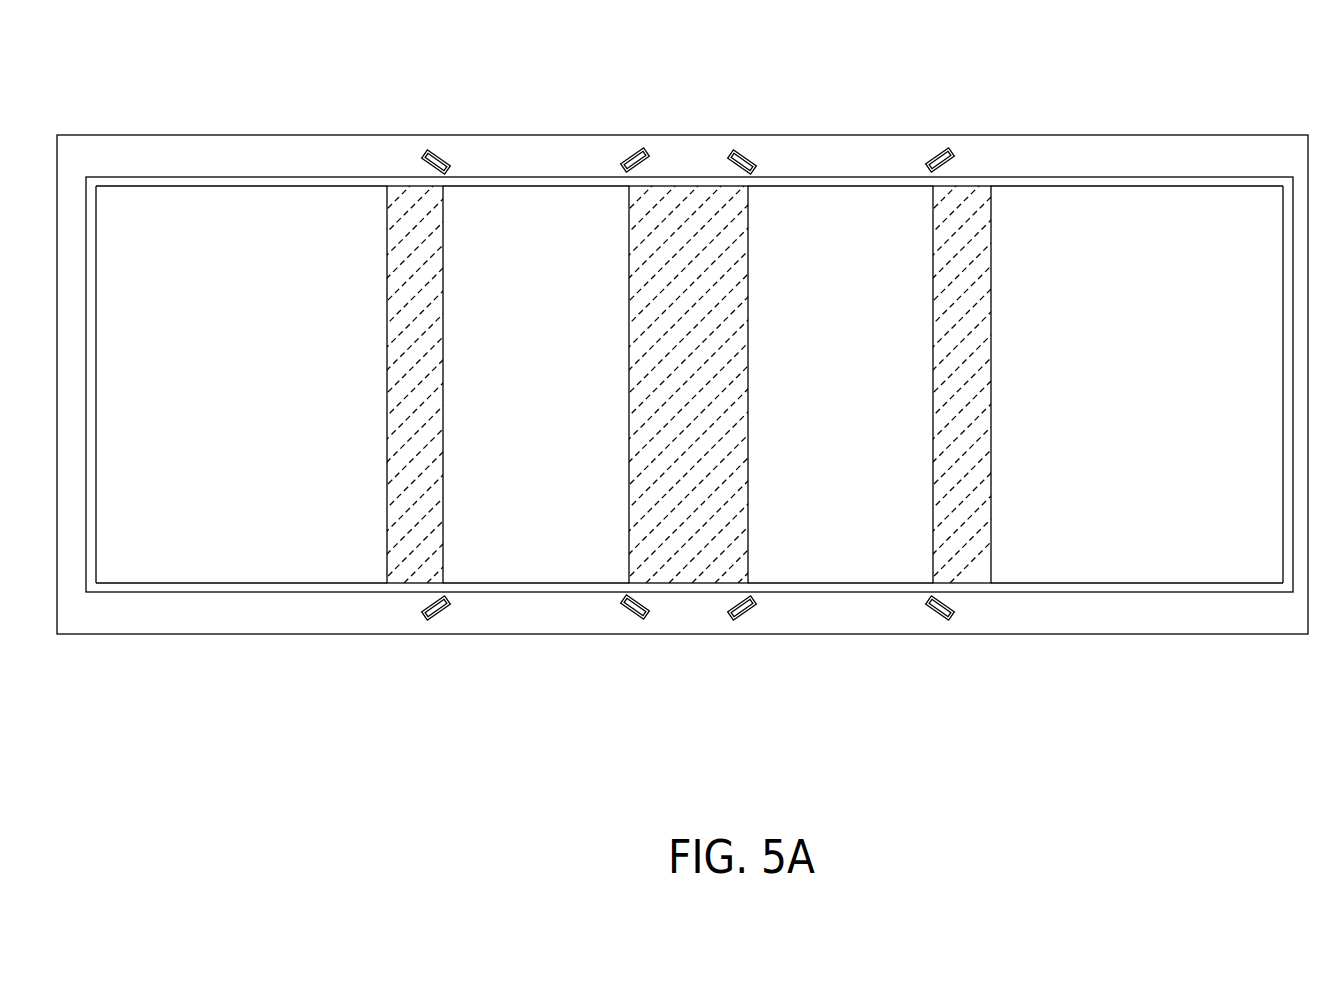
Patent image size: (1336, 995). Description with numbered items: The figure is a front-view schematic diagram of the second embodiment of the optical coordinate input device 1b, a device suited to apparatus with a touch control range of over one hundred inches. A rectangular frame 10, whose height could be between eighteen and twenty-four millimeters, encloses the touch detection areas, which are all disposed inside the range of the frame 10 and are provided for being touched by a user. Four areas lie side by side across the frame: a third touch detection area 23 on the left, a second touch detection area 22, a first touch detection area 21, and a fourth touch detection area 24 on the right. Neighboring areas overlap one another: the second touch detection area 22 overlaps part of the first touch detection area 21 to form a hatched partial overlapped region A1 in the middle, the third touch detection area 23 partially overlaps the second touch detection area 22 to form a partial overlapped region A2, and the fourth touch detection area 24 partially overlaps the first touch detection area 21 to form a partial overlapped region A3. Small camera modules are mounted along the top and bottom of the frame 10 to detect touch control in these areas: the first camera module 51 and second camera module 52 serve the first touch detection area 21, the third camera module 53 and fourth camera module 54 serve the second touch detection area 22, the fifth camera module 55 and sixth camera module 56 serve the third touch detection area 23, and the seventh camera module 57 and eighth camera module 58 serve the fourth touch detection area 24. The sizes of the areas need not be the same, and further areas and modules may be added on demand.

The optical coordinate input device 1b is at (696, 344).
The frame 10 is at (1140, 146).
The first touch detection area 21 is at (873, 572).
The second touch detection area 22 is at (530, 573).
The third touch detection area 23 is at (179, 563).
The fourth touch detection area 24 is at (1155, 572).
The first camera module 51 is at (635, 148).
The second camera module 52 is at (642, 622).
The third camera module 53 is at (735, 148).
The fourth camera module 54 is at (738, 622).
The fifth camera module 55 is at (429, 148).
The sixth camera module 56 is at (430, 622).
The seventh camera module 57 is at (940, 146).
The eighth camera module 58 is at (945, 622).
The partial overlapped region A1 is at (632, 329).
The partial overlapped region A2 is at (392, 309).
The partial overlapped region A3 is at (982, 298).